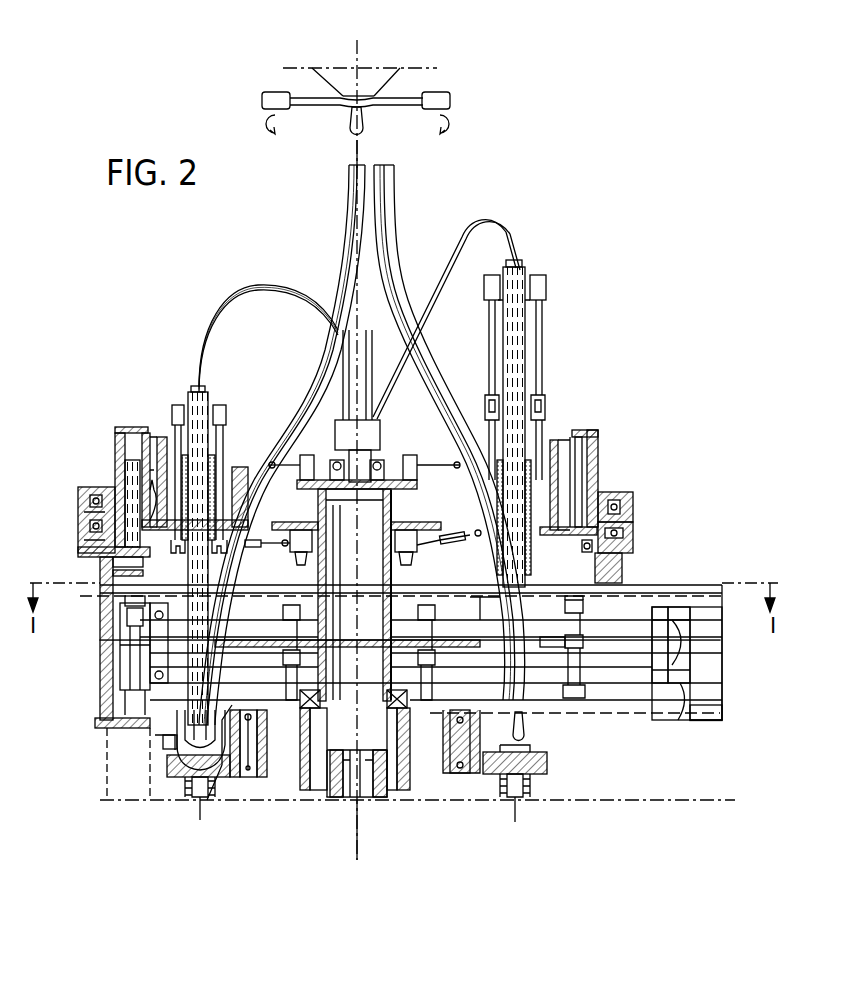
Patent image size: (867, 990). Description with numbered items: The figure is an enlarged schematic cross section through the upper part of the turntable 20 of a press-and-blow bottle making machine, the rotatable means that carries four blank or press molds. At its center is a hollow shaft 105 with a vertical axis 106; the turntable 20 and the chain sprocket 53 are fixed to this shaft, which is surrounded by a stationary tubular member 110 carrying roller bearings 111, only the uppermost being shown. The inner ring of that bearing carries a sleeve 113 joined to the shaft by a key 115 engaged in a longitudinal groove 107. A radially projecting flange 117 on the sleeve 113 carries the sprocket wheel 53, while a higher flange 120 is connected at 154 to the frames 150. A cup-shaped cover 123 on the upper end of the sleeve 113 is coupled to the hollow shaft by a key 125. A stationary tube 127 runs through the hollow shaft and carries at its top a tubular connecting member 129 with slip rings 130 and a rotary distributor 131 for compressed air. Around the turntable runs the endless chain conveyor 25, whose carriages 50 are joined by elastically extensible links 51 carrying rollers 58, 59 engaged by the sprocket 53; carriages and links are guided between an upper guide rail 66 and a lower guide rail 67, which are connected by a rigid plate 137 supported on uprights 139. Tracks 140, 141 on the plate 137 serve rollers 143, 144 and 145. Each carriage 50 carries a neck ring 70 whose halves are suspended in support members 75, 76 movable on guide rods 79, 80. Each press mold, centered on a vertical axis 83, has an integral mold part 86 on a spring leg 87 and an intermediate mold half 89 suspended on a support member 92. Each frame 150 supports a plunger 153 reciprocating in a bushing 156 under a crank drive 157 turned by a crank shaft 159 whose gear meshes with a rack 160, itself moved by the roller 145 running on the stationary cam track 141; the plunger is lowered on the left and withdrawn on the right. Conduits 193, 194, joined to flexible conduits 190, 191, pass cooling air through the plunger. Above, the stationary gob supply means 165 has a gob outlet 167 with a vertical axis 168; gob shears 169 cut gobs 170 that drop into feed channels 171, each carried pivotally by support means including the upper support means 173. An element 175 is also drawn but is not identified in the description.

The turntable 20 is at (120, 348).
The endless chain conveyor 25 is at (615, 700).
The carriage 50 is at (400, 630).
The connecting link 51 is at (650, 615).
The chain sprocket 53 is at (300, 650).
The roller 58 is at (585, 655).
The roller 59 is at (485, 648).
The upper guide rail 66 is at (100, 608).
The lower guide rail 67 is at (100, 700).
The neck ring 70 is at (240, 706).
The neck ring support member 75 is at (95, 723).
The neck ring support member 76 is at (130, 650).
The guide rod 79 is at (690, 620).
The guide rod 80 is at (690, 668).
The vertical axis of press mold 83 is at (200, 820).
The integral mold part 86 is at (180, 778).
The spring leg 87 is at (178, 795).
The intermediate mold half 89 is at (165, 732).
The support member 92 is at (160, 745).
The central hollow shaft 105 is at (330, 797).
The vertical axis 106 is at (358, 845).
The longitudinal groove 107 is at (327, 800).
The stationary tubular member 110 is at (300, 795).
The roller bearing 111 is at (300, 718).
The sleeve 113 is at (383, 540).
The key 115 is at (334, 572).
The flange 117 is at (480, 672).
The flange 120 is at (417, 535).
The cup-shaped cover 123 is at (395, 498).
The key 125 is at (325, 472).
The stationary tube 127 is at (360, 800).
The tubular connecting member 129 is at (371, 470).
The slip rings 130 is at (380, 440).
The rotary distributor for compressed air 131 is at (372, 420).
The rigid plate 137 is at (120, 635).
The upright 139 is at (120, 800).
The track 140 is at (92, 498).
The cam track 141 is at (80, 555).
The roller 143 is at (625, 510).
The roller 144 is at (625, 540).
The roller 145 is at (622, 565).
The frame 150 is at (88, 536).
The plunger 153 is at (520, 605).
The connection 154 is at (262, 518).
The bushing 156 is at (220, 455).
The crank drive 157 is at (535, 340).
The crank shaft 159 is at (575, 490).
The rack 160 is at (116, 465).
The gob supply means 165 is at (395, 80).
The gob outlet 167 is at (363, 95).
The vertical axis 168 is at (352, 52).
The gob shears 169 is at (396, 106).
The gob 170 is at (349, 130).
The feed channel 171 is at (385, 225).
The upper support means 173 is at (272, 461).
The plate 175 is at (255, 612).
The flexible conduit 190 is at (206, 360).
The flexible conduit 191 is at (198, 340).
The conduit 193 is at (503, 320).
The conduit 194 is at (530, 320).